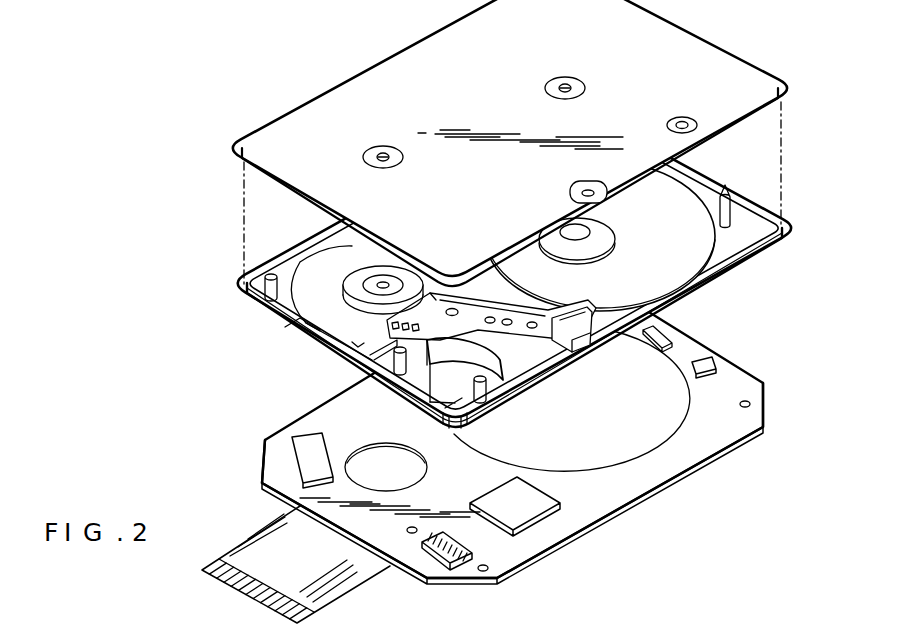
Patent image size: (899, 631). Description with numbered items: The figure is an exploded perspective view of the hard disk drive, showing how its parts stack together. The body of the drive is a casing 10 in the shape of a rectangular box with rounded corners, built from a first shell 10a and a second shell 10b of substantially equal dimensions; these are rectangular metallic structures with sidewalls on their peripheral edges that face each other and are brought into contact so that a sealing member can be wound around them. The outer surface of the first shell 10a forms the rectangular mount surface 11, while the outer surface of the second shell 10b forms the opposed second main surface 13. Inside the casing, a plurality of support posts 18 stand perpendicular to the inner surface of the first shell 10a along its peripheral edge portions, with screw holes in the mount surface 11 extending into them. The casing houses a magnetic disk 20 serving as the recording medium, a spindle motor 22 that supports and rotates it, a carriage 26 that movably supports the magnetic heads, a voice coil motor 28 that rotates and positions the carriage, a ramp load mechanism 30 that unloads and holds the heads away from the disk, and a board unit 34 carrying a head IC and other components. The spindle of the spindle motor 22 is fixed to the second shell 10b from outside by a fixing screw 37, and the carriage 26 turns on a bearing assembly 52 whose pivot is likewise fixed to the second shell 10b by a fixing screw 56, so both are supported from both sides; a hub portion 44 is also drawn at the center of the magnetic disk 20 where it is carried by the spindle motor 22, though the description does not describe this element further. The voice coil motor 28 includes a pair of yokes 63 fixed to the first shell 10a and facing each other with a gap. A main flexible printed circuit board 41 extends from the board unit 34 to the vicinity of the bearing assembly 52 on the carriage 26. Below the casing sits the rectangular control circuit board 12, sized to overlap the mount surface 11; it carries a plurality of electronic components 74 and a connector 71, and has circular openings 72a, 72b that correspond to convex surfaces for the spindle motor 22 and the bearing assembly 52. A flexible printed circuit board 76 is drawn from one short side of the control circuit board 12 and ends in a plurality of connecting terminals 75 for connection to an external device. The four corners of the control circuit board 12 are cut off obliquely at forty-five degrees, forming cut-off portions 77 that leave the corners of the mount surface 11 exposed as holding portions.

The casing 10 is at (326, 79).
The first shell 10a is at (755, 265).
The second shell 10b is at (697, 43).
The mount surface 11 is at (300, 343).
The control circuit board 12 is at (623, 490).
The second main surface 13 is at (422, 63).
The support posts 18 is at (730, 197).
The magnetic disk 20 is at (700, 275).
The spindle motor 22 is at (618, 232).
The carriage 26 is at (473, 306).
The voice coil motor 28 is at (315, 272).
The ramp load mechanism 30 is at (580, 343).
The board unit 34 is at (453, 397).
The fixing screw 37 is at (567, 84).
The main flexible printed circuit board 41 is at (437, 352).
The disk hub 44 is at (593, 242).
The bearing assembly 52 is at (397, 275).
The fixing screw 56 is at (383, 153).
The yokes 63 is at (285, 327).
The connector 71 is at (480, 547).
The circular opening 72a is at (653, 443).
The circular opening 72b is at (377, 458).
The electronic components 74 is at (303, 440).
The connecting terminals 75 is at (213, 580).
The flexible printed circuit board 76 is at (350, 588).
The cut-off portions 77 is at (252, 462).